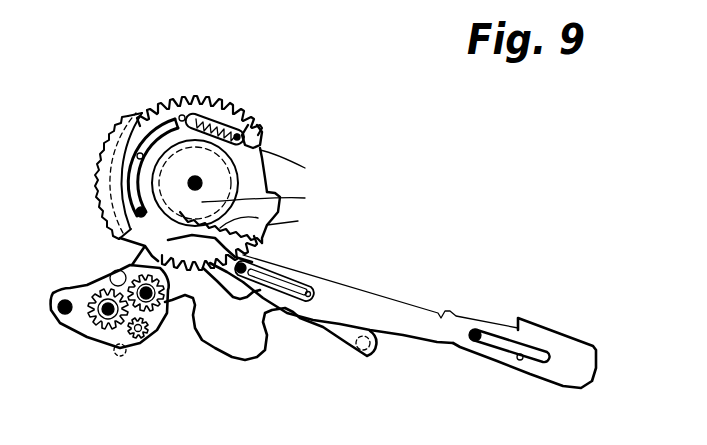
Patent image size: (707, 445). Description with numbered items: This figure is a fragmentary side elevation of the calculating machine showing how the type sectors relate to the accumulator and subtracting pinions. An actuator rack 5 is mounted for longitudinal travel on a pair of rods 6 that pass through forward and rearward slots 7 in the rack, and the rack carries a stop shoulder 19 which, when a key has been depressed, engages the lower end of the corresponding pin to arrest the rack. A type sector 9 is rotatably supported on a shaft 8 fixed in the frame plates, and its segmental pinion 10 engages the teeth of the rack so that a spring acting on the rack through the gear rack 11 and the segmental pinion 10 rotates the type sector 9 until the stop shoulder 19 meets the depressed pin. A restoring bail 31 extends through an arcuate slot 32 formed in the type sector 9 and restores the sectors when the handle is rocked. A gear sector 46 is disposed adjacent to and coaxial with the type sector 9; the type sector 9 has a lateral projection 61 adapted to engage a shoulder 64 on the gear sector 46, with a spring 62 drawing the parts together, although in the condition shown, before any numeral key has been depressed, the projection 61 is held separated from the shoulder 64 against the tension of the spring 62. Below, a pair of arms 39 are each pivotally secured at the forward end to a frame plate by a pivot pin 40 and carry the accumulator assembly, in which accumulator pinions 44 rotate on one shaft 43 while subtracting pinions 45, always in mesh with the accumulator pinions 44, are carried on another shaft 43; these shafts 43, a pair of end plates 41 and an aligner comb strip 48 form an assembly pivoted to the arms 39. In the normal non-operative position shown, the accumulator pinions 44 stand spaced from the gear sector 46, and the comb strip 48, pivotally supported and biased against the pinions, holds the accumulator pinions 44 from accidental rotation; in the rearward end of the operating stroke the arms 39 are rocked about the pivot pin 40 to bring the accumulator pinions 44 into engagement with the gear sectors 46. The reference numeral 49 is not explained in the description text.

The actuator rack 5 is at (402, 310).
The rod 6 is at (243, 257).
The slot 7 is at (322, 287).
The shaft 8 is at (262, 141).
The type sector 9 is at (168, 118).
The segmental pinion 10 is at (305, 198).
The gear rack 11 is at (298, 221).
The stop shoulder 19 is at (562, 333).
The restoring bail 31 is at (136, 212).
The arcuate slot 32 is at (137, 156).
The arm 39 is at (270, 350).
The pivot pin 40 is at (371, 344).
The end plate 41 is at (58, 325).
The shaft 43 is at (86, 283).
The accumulator pinion 44 is at (134, 340).
The subtracting pinion 45 is at (82, 342).
The gear sector 46 is at (252, 241).
The aligner comb strip 48 is at (163, 320).
The pinion 49 is at (126, 346).
The lateral projection 61 is at (262, 141).
The spring 62 is at (200, 174).
The shoulder 64 is at (305, 168).